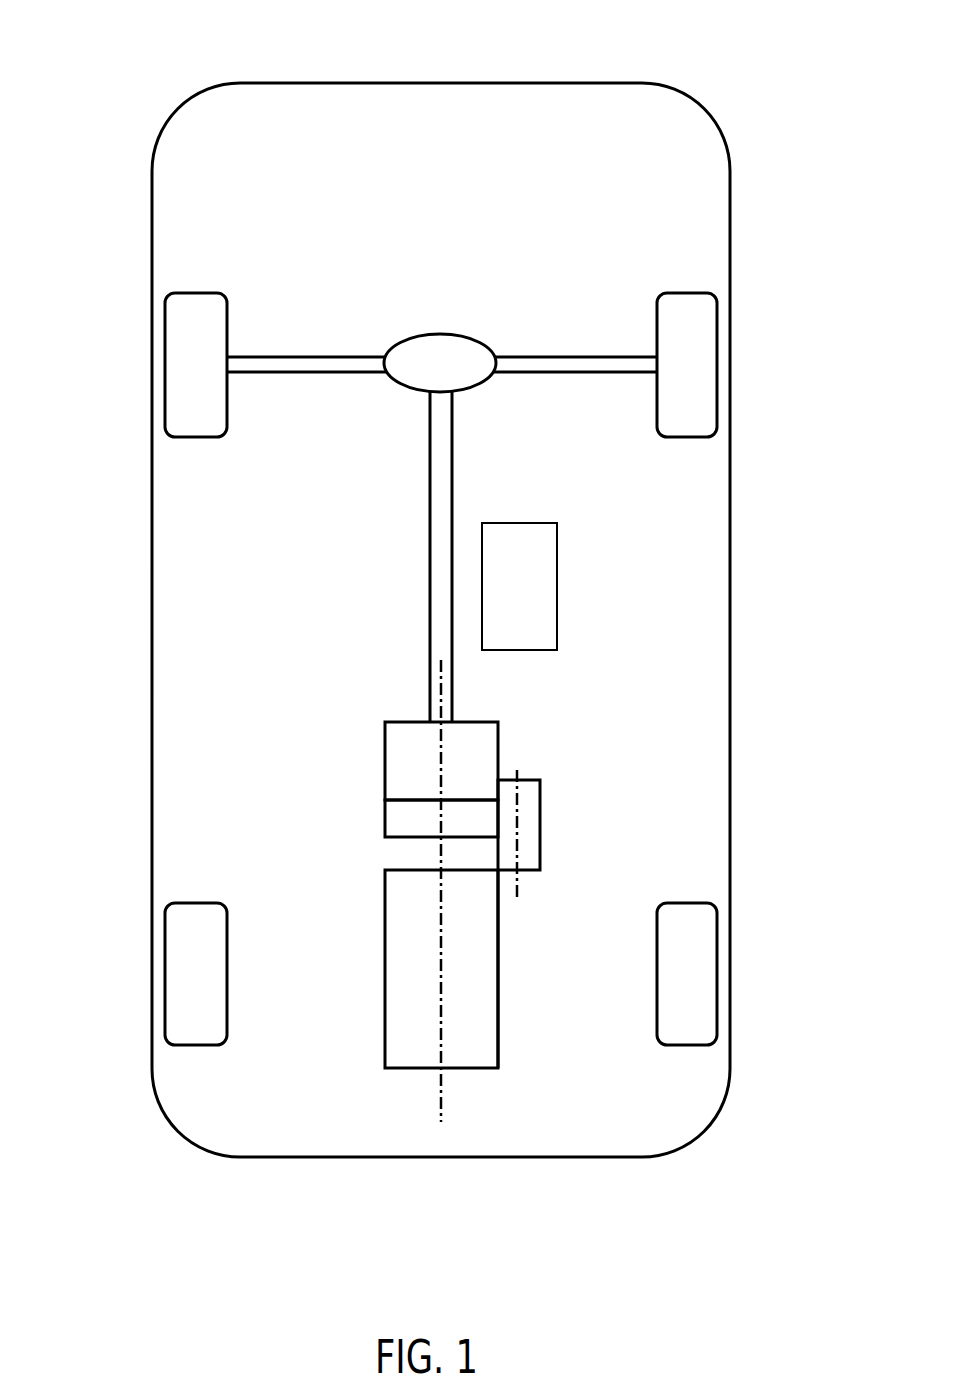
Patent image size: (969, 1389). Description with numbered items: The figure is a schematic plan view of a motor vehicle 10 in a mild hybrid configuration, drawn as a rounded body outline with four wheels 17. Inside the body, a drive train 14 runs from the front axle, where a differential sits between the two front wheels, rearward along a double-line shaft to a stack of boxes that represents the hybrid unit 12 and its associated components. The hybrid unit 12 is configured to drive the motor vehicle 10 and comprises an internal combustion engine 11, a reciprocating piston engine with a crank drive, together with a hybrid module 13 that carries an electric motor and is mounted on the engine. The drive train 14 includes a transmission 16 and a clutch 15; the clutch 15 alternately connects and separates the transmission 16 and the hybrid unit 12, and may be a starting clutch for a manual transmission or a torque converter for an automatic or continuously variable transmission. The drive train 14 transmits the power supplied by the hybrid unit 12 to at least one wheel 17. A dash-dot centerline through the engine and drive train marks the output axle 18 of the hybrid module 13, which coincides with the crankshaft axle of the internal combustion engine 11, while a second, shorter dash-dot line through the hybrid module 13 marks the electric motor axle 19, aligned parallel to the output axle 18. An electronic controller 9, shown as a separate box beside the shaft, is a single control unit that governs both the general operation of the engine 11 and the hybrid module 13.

The motor vehicle 10 is at (106, 102).
The wheel 17 is at (204, 302).
The drive train 14 is at (388, 623).
The electronic controller 9 is at (527, 599).
The transmission 16 is at (500, 741).
The clutch 15 is at (385, 812).
The hybrid module 13 is at (542, 827).
The hybrid unit 12 is at (362, 971).
The internal combustion engine 11 is at (500, 975).
The output axle 18 is at (438, 948).
The electric motor axle 19 is at (518, 888).